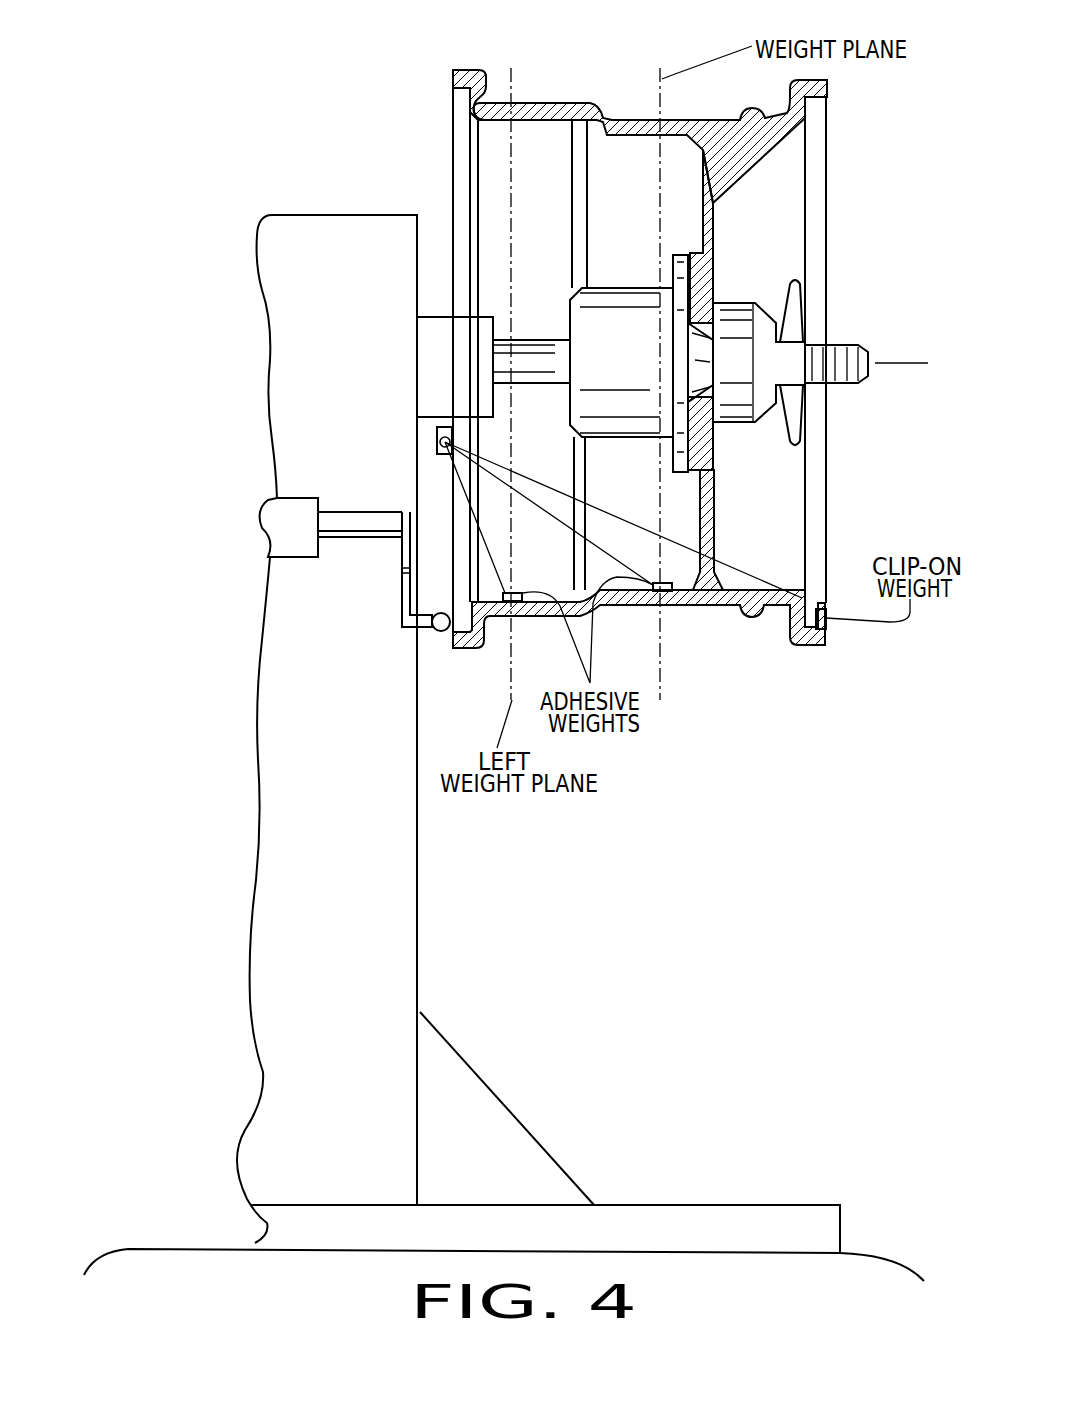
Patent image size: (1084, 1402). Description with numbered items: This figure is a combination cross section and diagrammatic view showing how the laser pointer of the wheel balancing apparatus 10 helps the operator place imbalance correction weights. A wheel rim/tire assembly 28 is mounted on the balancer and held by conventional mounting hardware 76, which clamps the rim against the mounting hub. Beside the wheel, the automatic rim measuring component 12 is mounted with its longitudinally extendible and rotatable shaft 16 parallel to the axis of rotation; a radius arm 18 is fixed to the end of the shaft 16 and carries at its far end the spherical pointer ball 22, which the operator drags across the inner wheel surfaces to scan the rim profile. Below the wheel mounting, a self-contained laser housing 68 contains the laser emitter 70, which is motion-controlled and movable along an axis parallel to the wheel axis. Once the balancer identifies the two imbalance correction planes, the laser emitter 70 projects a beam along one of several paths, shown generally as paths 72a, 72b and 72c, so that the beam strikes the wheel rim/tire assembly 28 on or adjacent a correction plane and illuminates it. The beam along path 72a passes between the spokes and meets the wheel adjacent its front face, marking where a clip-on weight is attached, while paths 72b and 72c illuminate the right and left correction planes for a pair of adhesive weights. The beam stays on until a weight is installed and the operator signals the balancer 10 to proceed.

The wheel balancing apparatus 10 is at (349, 1171).
The automatic rim measuring component 12 is at (282, 522).
The shaft 16 is at (357, 523).
The radius arm 18 is at (405, 602).
The pointer ball 22 is at (434, 637).
The wheel rim/tire assembly 28 is at (493, 200).
The laser housing 68 is at (436, 428).
The laser emitter 70 is at (438, 443).
The laser beam path 72a is at (805, 603).
The laser beam path 72b is at (600, 547).
The laser beam path 72c is at (490, 548).
The mounting hardware 76 is at (771, 262).